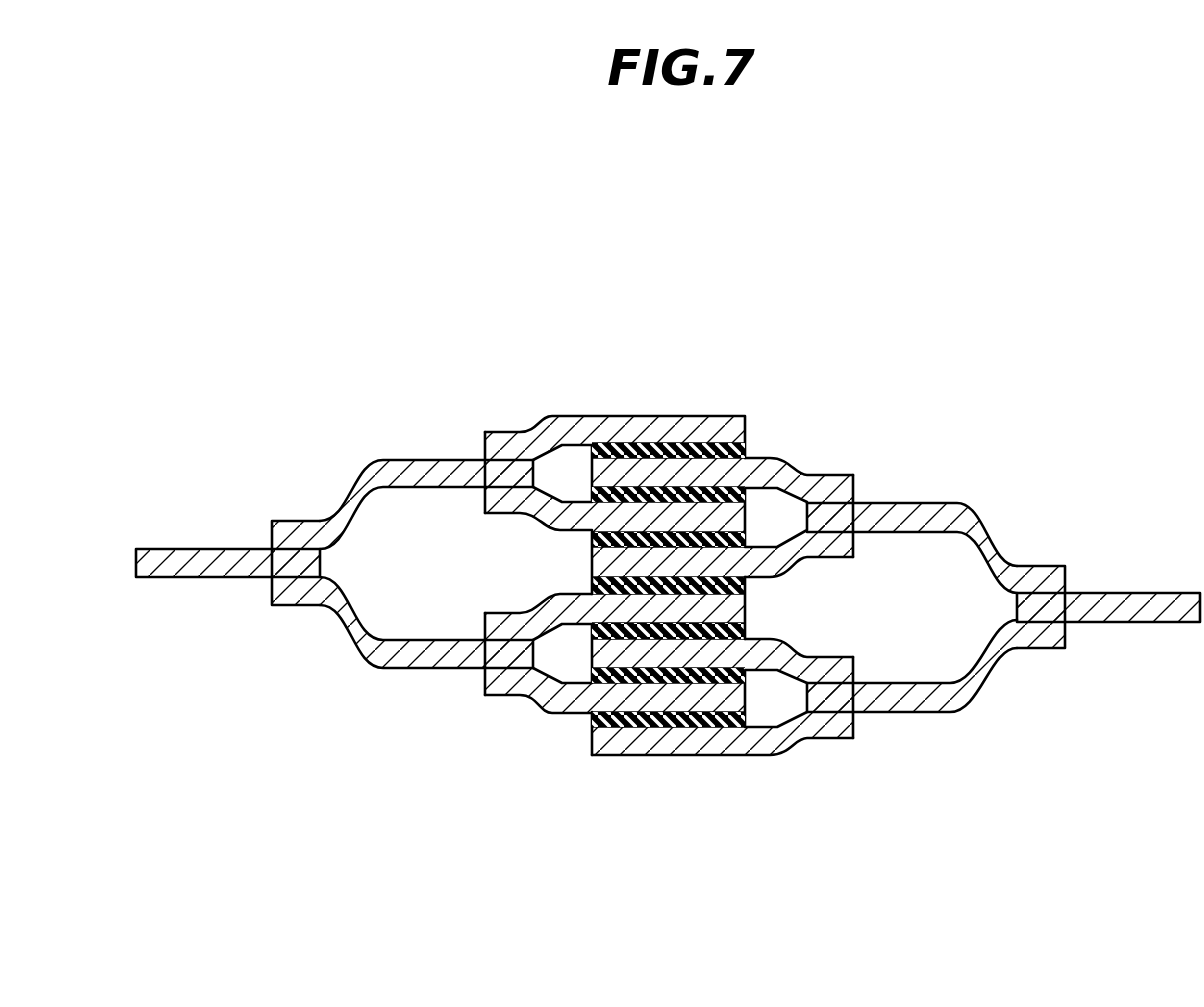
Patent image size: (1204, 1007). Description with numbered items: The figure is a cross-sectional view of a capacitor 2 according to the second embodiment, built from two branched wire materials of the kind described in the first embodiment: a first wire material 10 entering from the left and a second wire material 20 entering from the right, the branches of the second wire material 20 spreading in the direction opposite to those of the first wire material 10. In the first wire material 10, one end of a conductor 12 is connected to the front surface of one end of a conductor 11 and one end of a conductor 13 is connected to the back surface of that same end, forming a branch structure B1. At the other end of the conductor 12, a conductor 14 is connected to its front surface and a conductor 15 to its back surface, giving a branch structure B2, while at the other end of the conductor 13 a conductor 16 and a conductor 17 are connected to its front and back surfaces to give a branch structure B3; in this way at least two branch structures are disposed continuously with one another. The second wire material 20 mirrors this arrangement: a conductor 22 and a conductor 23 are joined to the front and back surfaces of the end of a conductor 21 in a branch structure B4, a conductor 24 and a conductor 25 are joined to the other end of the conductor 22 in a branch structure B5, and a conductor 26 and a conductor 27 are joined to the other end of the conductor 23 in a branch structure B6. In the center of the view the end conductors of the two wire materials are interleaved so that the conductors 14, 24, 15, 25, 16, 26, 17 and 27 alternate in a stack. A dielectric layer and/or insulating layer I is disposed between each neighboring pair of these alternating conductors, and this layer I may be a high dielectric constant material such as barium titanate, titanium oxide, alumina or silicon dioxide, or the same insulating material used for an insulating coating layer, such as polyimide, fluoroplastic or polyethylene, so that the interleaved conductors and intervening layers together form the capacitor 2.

The capacitor 2 is at (707, 216).
The first wire material 10 is at (462, 340).
The second wire material 20 is at (1079, 402).
The conductor 11 is at (198, 570).
The conductor 12 is at (400, 467).
The conductor 13 is at (413, 663).
The conductor 14 is at (651, 428).
The conductor 15 is at (549, 513).
The conductor 16 is at (529, 614).
The conductor 17 is at (580, 703).
The conductor 21 is at (1140, 603).
The conductor 22 is at (997, 530).
The conductor 23 is at (988, 668).
The conductor 24 is at (805, 480).
The conductor 25 is at (803, 553).
The conductor 26 is at (833, 665).
The conductor 27 is at (825, 732).
The dielectric layer and/or insulating layer I is at (731, 491).
The branch structure B1 is at (291, 490).
The branch structure B2 is at (541, 402).
The branch structure B3 is at (498, 728).
The branch structure B4 is at (1075, 546).
The branch structure B5 is at (892, 468).
The branch structure B6 is at (873, 752).